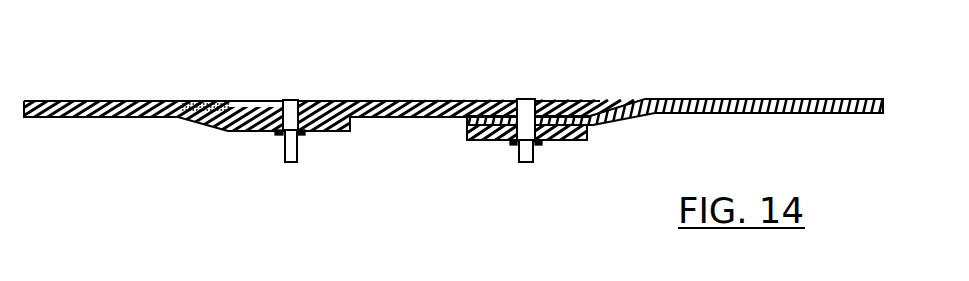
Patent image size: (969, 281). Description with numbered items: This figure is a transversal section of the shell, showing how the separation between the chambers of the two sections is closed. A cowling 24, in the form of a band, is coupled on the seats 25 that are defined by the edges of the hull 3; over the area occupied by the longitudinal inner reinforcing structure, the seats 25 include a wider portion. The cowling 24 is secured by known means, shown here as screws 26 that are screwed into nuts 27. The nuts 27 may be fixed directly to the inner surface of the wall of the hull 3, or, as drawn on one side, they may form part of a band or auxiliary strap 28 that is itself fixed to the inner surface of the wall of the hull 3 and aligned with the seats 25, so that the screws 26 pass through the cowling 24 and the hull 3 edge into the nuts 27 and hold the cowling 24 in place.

The hull 3 is at (115, 100).
The cowling 24 is at (402, 101).
The seats 25 is at (467, 118).
The screws 26 is at (283, 100).
The nuts 27 is at (275, 132).
The auxiliary strap 28 is at (571, 140).